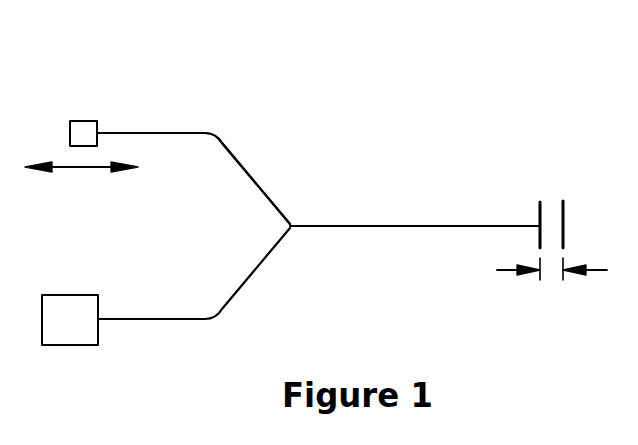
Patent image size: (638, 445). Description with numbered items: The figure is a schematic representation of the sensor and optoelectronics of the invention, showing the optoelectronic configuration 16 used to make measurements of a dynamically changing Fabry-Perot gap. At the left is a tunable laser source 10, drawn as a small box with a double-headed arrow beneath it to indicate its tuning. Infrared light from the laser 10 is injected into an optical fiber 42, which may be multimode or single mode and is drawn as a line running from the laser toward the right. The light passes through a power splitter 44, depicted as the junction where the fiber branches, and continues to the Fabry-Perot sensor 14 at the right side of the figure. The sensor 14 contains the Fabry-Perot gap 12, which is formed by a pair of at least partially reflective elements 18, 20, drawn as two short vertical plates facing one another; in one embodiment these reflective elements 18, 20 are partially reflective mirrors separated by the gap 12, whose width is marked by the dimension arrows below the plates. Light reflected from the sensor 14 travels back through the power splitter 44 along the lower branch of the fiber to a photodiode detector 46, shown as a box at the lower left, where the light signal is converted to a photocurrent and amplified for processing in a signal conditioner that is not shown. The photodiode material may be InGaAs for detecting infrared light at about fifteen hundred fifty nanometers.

The tunable laser source 10 is at (85, 132).
The Fabry-Perot gap 12 is at (536, 269).
The Fabry-Perot sensor 14 is at (546, 150).
The optoelectronic configuration 16 is at (358, 80).
The reflective element 18 is at (540, 215).
The reflective element 20 is at (561, 215).
The optical fiber 42 is at (178, 133).
The power splitter 44 is at (292, 226).
The photodiode detector 46 is at (80, 312).